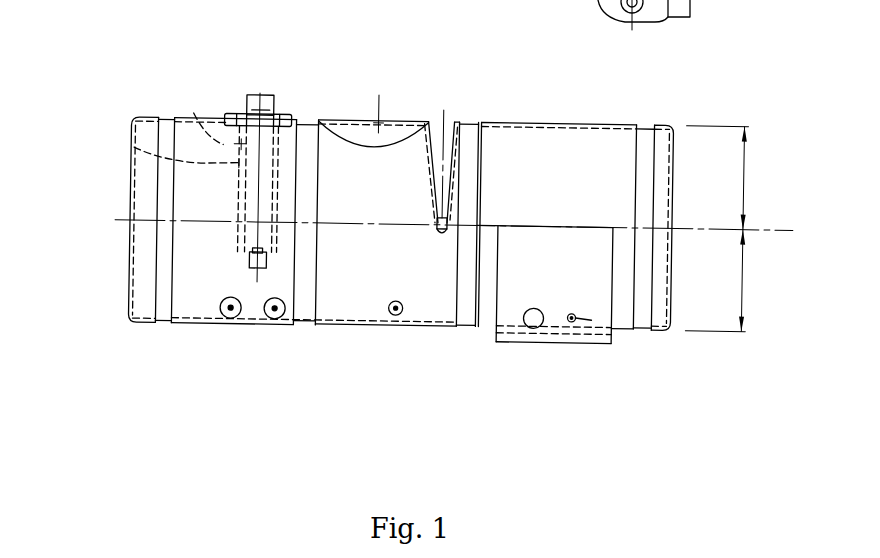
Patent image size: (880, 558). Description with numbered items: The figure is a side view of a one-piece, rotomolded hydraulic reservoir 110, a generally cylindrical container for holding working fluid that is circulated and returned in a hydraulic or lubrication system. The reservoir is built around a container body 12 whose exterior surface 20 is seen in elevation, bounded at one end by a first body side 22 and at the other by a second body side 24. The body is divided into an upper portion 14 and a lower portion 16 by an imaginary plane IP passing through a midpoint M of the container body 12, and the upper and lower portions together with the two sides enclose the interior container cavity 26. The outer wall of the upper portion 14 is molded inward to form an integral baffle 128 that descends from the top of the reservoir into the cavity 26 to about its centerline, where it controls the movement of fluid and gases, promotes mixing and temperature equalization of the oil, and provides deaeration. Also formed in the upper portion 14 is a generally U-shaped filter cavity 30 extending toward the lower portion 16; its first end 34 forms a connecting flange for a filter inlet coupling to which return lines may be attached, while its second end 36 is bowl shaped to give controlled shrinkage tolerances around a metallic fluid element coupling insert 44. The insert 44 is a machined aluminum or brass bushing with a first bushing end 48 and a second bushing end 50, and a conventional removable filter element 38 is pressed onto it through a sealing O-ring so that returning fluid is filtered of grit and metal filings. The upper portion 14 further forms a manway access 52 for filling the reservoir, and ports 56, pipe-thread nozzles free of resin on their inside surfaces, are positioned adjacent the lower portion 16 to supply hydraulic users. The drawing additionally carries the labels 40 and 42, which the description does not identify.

The container body 12 is at (127, 272).
The upper portion 14 is at (743, 157).
The lower portion 16 is at (743, 267).
The exterior surface 20 is at (433, 302).
The first body side 22 is at (677, 151).
The second body side 24 is at (123, 200).
The interior container cavity 26 is at (580, 190).
The filter cavity 30 is at (127, 137).
The first end 34 is at (192, 112).
The second end 36 is at (240, 229).
The filter element 38 is at (257, 91).
The nut 40 is at (280, 112).
The bolt passage 42 is at (247, 258).
The metallic fluid element coupling insert 44 is at (268, 262).
The first bushing end 48 is at (287, 235).
The second bushing end 50 is at (277, 318).
The manway access 52 is at (387, 96).
The ports 56 is at (552, 323).
The hydraulic reservoir 110 is at (211, 90).
The integral baffle 128 is at (452, 163).
The intersection plane IP is at (773, 220).
The midpoint M is at (413, 223).